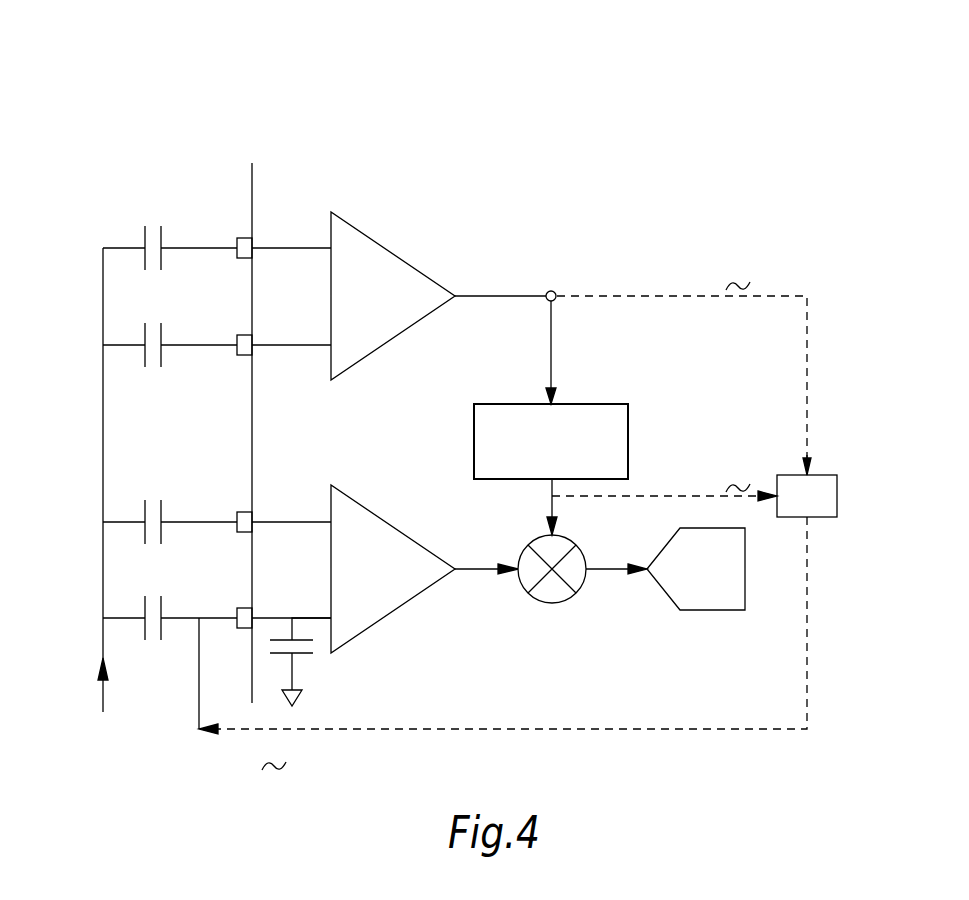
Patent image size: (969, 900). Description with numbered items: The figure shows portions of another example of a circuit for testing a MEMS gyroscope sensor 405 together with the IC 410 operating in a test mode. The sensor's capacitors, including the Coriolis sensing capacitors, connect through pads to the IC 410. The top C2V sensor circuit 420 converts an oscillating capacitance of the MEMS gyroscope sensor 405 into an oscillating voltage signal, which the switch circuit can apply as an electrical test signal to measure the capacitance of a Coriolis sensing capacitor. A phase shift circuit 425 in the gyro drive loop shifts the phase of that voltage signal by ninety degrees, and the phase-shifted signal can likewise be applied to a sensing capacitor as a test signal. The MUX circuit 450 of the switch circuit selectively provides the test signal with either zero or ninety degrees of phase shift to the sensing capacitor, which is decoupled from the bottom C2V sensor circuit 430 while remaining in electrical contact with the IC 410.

The MEMS gyroscope sensor 405 is at (113, 38).
The IC 410 is at (522, 194).
The top C2V sensor circuit 420 is at (392, 252).
The phase shift circuit 425 is at (631, 424).
The bottom C2V sensor circuit 430 is at (392, 522).
The MUX circuit 450 is at (840, 497).